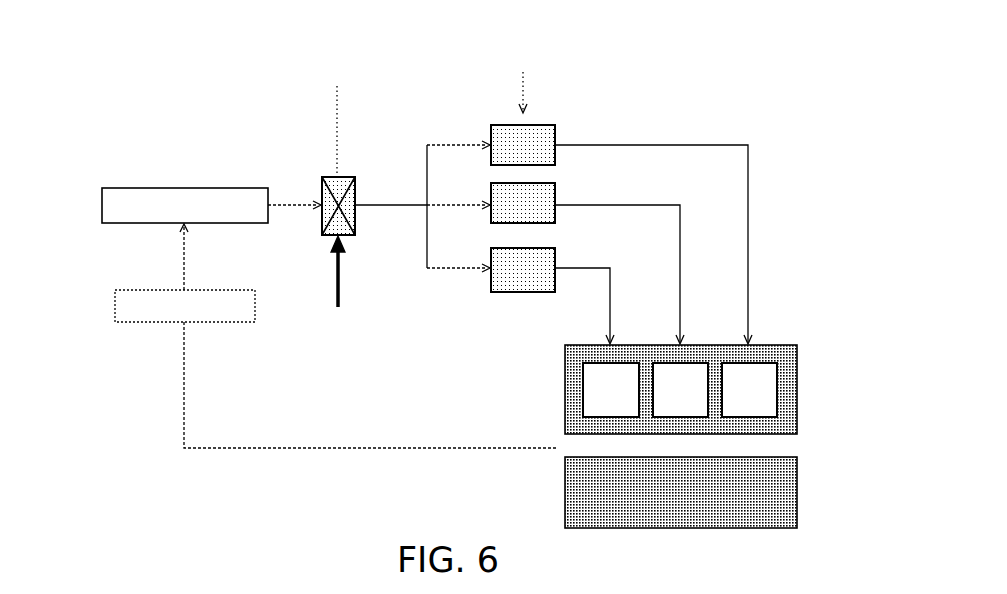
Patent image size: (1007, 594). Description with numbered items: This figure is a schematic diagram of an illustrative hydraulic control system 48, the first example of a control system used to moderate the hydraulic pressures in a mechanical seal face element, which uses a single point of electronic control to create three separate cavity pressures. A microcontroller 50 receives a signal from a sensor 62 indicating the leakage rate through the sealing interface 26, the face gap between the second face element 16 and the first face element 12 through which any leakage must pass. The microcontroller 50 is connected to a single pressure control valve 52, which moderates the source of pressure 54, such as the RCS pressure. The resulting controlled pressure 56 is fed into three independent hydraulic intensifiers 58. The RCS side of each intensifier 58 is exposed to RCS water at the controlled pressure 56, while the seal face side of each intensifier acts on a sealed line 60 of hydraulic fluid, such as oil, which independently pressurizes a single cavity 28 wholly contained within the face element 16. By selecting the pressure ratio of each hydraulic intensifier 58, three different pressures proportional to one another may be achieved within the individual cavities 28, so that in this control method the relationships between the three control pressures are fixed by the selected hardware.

The system 48 is at (122, 44).
The microcontroller 50 is at (157, 187).
The pressure control valve 52 is at (321, 176).
The source of pressure 54 is at (338, 315).
The controlled pressure 56 is at (376, 198).
The hydraulic intensifiers 58 is at (536, 156).
The sealed line 60 is at (680, 143).
The second face element 16 is at (701, 389).
The cavities 28 is at (620, 398).
The sealing interface 26 is at (800, 443).
The first face element 12 is at (797, 500).
The sensor 62 is at (150, 323).